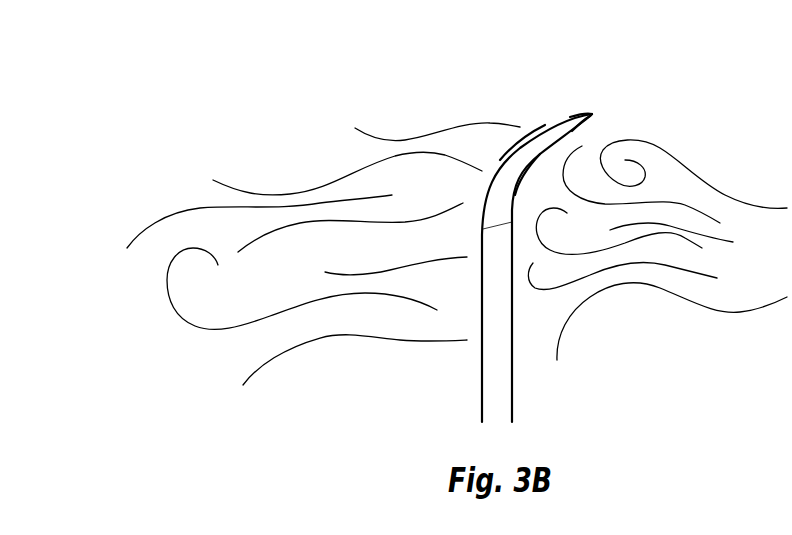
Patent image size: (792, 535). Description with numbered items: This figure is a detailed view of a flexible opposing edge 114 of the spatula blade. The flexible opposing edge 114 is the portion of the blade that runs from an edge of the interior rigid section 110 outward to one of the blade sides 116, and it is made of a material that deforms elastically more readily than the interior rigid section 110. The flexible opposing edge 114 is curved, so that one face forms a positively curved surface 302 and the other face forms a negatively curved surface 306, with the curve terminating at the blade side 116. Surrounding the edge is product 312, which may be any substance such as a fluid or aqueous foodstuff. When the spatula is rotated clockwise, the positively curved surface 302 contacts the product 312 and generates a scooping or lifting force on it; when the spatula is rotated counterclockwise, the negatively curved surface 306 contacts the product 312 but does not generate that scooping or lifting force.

The interior rigid section 110 is at (481, 372).
The flexible opposing edge 114 is at (291, 113).
The blade side 116 is at (592, 114).
The positively curved surface 302 is at (530, 177).
The negatively curved surface 306 is at (539, 116).
The product 312 is at (365, 257).